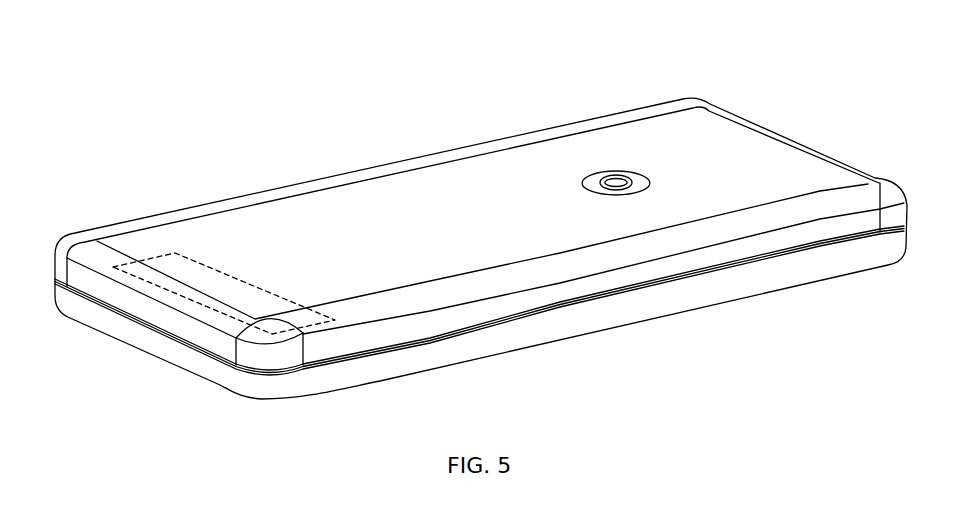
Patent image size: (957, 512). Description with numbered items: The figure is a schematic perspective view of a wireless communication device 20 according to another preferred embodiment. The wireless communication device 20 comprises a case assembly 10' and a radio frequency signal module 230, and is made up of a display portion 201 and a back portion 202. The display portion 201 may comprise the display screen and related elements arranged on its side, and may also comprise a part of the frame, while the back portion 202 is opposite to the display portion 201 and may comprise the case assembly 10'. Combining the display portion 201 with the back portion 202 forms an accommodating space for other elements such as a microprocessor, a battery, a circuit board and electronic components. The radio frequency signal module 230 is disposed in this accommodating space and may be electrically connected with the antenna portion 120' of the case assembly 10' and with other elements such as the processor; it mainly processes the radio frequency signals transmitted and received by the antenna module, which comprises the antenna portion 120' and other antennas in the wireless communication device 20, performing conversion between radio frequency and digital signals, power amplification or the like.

The wireless communication device 20 is at (817, 43).
The case assembly 10' is at (473, 193).
The antenna portion 120' is at (458, 284).
The display portion 201 is at (648, 314).
The back portion 202 is at (560, 153).
The radio frequency signal module 230 is at (172, 262).